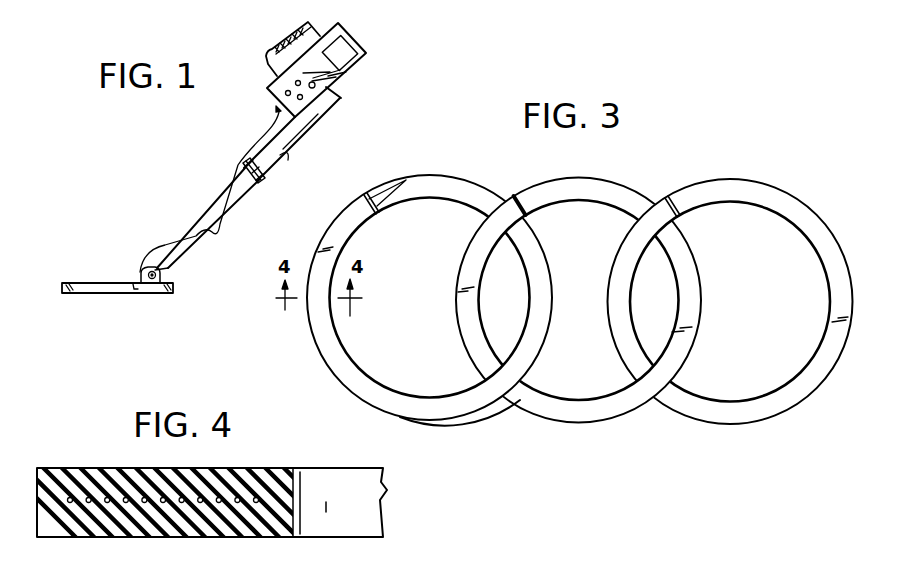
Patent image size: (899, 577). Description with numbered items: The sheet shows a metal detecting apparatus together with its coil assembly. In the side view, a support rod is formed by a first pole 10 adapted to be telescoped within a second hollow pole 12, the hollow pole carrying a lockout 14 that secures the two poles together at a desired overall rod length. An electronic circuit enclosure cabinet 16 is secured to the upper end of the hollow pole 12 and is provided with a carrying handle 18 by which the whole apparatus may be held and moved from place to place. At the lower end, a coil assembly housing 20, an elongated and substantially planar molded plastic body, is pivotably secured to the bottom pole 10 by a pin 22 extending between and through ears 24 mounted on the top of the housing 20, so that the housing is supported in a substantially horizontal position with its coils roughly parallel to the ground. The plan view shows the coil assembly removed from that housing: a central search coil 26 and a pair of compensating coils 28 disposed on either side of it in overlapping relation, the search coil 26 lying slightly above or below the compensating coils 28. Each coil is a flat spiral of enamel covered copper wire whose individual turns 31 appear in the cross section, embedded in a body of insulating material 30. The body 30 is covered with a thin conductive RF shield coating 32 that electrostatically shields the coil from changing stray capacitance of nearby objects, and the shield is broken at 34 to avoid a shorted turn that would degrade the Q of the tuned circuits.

In FIG. 1, the first pole 10 is at (210, 205).
In FIG. 1, the second hollow pole 12 is at (320, 118).
In FIG. 1, the lockout 14 is at (262, 178).
In FIG. 1, the electronic circuit enclosure cabinet 16 is at (348, 35).
In FIG. 1, the carrying handle 18 is at (292, 28).
In FIG. 1, the coil assembly housing 20 is at (62, 287).
In FIG. 1, the pin 22 is at (157, 277).
In FIG. 1, the ears 24 is at (142, 279).
In FIG. 3, the search coil 26 is at (608, 190).
In FIG. 3, the compensating coils 28 is at (353, 205).
In FIG. 4, the insulating material body 30 is at (128, 475).
In FIG. 4, the turns 31 is at (254, 498).
In FIG. 3, the RF shield coating 32 is at (476, 411).
In FIG. 4, the RF shield coating 32 is at (176, 537).
In FIG. 3, the break in shield 34 is at (513, 197).